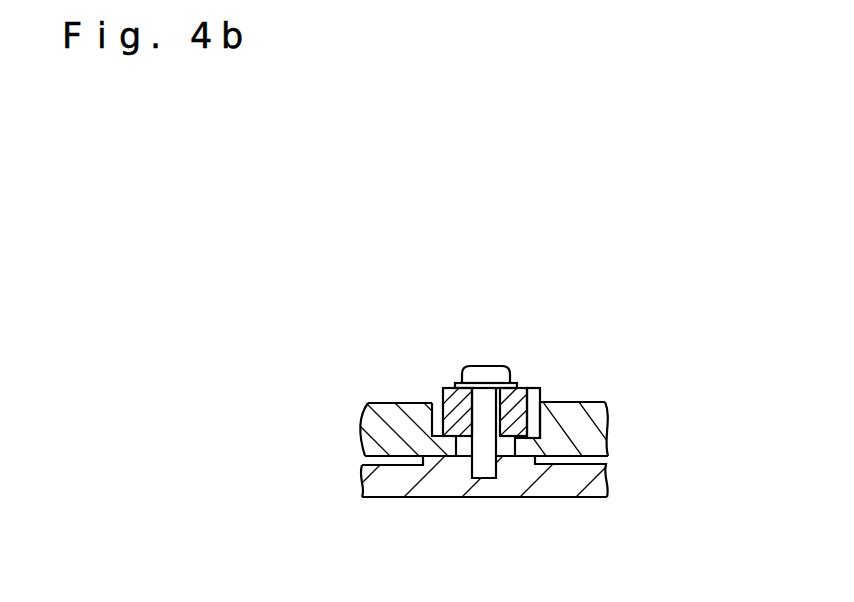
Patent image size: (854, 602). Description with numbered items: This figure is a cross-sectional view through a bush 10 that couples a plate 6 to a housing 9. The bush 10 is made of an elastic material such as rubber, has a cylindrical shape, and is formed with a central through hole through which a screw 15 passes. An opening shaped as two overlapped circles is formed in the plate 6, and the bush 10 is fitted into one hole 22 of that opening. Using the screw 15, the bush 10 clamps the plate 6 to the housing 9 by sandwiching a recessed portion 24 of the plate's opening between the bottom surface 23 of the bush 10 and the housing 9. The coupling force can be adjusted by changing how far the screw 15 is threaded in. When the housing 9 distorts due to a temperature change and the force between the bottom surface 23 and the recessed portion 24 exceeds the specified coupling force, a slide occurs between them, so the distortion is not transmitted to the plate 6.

The plate 6 is at (374, 402).
The hole 22 is at (441, 400).
The screw 15 is at (486, 368).
The bush 10 is at (517, 413).
The recessed portion 24 is at (452, 450).
The bottom surface 23 is at (460, 438).
The housing 9 is at (568, 483).